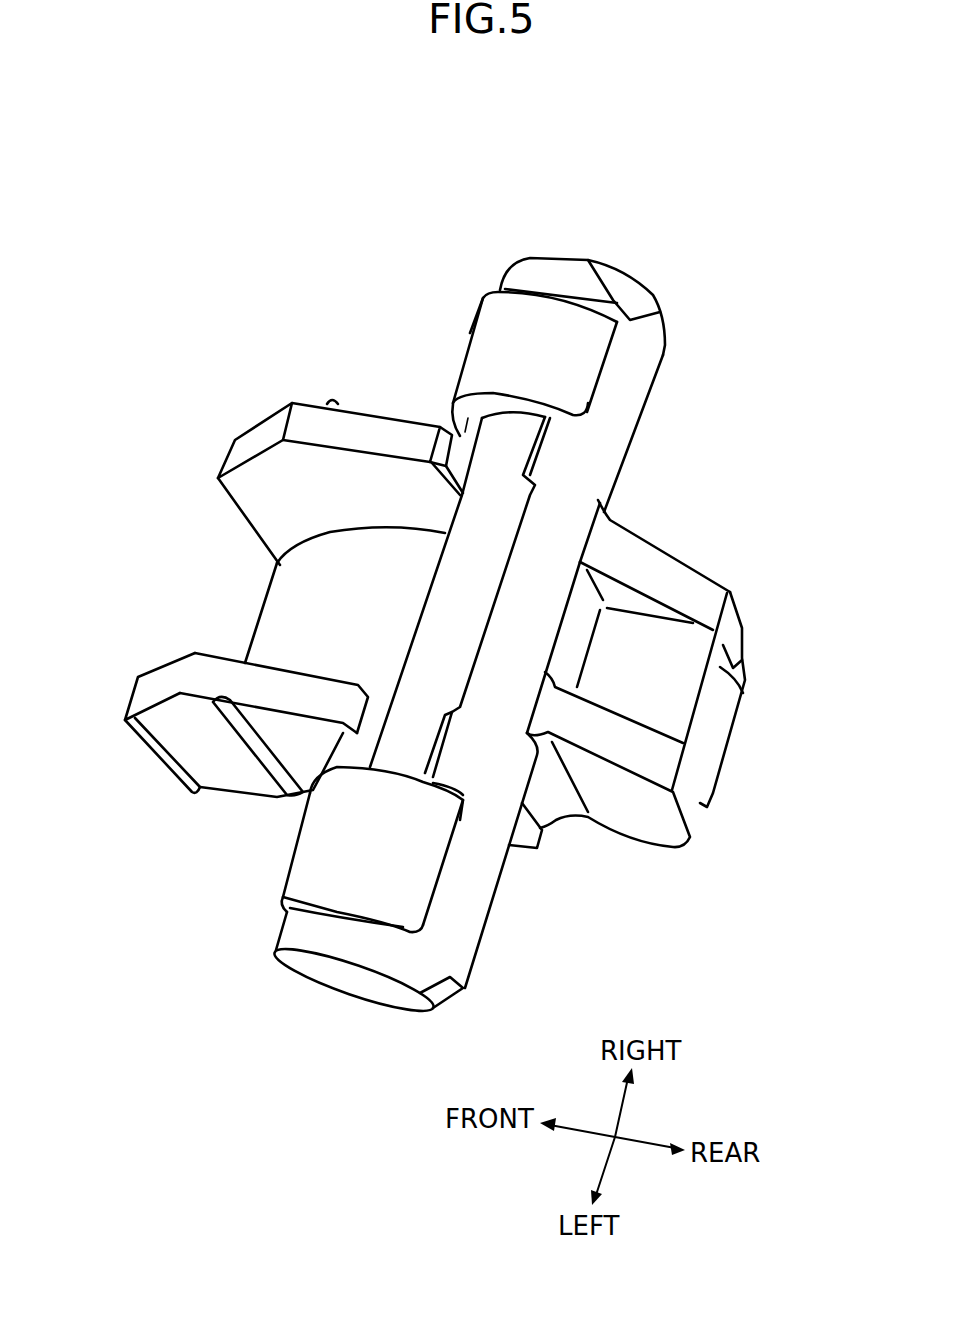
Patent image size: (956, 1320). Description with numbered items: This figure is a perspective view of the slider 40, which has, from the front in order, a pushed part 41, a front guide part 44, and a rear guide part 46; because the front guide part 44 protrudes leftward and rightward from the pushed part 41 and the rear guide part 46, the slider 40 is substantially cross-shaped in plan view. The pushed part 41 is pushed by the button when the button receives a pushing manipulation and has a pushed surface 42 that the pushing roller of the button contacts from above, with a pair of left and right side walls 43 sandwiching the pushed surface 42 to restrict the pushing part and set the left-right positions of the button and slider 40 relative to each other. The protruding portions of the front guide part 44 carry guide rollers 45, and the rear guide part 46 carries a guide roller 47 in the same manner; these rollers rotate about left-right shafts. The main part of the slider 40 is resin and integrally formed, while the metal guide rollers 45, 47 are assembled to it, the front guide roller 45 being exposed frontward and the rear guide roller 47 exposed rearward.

The slider 40 is at (787, 160).
The pushed part 41 is at (324, 378).
The pushed surface 42 is at (263, 607).
The side walls 43 is at (262, 422).
The front guide part 44 is at (580, 250).
The guide rollers 45 is at (475, 340).
The rear guide part 46 is at (683, 552).
The guide roller 47 is at (710, 737).